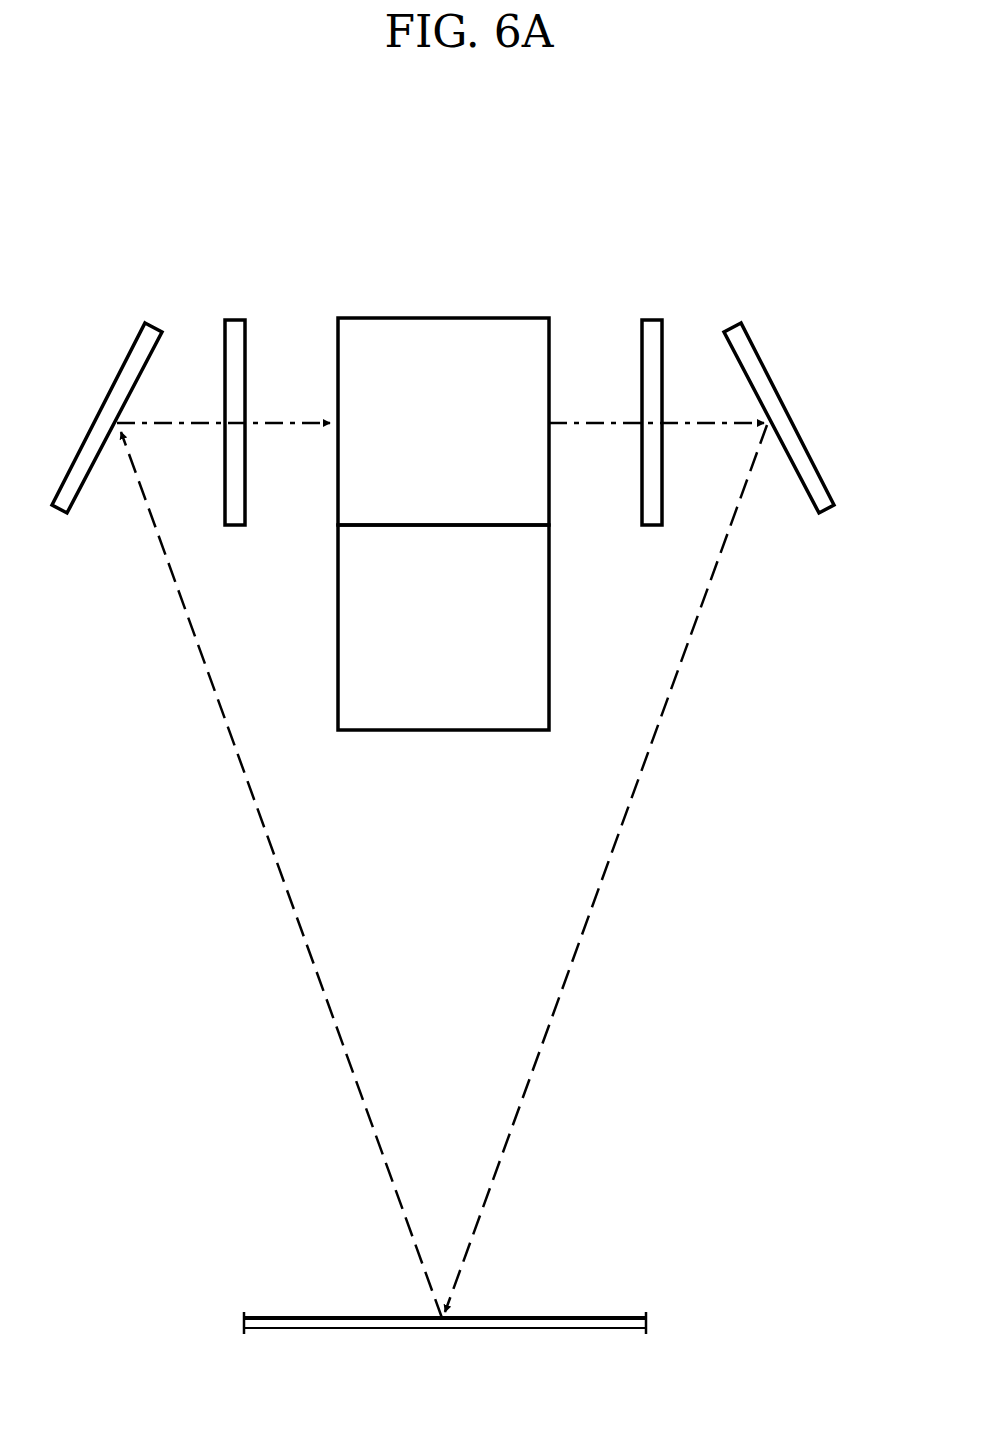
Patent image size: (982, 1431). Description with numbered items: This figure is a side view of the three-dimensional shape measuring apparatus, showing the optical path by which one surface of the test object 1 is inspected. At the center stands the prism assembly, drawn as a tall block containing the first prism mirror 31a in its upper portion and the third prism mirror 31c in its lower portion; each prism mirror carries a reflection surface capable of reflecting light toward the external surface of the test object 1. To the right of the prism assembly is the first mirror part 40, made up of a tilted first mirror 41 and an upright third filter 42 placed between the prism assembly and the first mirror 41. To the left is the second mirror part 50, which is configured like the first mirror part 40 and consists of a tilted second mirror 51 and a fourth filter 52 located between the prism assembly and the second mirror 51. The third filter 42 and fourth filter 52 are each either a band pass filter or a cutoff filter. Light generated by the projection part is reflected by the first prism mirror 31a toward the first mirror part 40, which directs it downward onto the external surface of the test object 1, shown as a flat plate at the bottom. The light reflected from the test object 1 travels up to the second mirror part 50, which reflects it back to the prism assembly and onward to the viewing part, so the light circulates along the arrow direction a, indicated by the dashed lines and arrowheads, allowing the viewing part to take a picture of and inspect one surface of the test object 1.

The second mirror part 50 is at (103, 207).
The second mirror 51 is at (139, 334).
The fourth filter 52 is at (244, 330).
The first mirror part 40 is at (617, 207).
The first mirror 41 is at (746, 333).
The third filter 42 is at (644, 331).
The first prism mirror 31a is at (421, 330).
The third prism mirror 31c is at (431, 720).
The arrow direction a is at (318, 423).
The test object 1 is at (280, 1318).